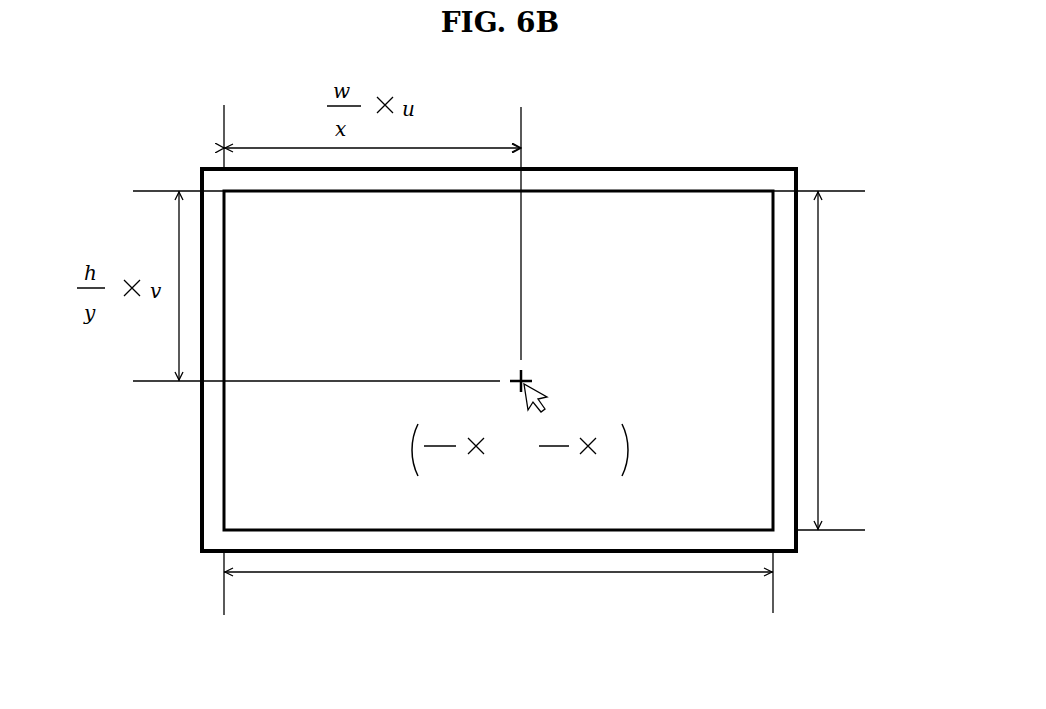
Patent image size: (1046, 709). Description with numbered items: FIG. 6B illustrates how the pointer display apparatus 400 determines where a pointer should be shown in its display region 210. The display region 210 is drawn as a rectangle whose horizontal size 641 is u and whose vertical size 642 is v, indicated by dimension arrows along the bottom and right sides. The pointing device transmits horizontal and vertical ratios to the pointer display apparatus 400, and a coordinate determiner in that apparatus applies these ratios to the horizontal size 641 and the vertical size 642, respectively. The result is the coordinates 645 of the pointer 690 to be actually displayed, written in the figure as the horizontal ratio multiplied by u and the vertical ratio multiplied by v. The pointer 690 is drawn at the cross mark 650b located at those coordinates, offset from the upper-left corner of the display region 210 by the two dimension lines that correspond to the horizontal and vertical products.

The pointer display apparatus 400 is at (718, 168).
The display region 210 is at (578, 210).
The cursor position mark 650b is at (533, 372).
The pointer 690 is at (545, 393).
The coordinates 645 is at (622, 445).
The horizontal size 641 is at (560, 630).
The vertical size 642 is at (910, 382).